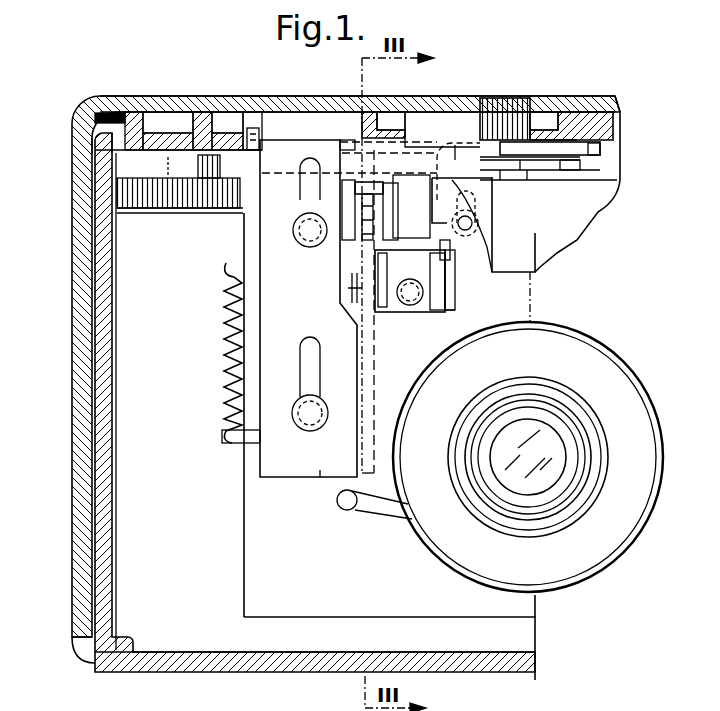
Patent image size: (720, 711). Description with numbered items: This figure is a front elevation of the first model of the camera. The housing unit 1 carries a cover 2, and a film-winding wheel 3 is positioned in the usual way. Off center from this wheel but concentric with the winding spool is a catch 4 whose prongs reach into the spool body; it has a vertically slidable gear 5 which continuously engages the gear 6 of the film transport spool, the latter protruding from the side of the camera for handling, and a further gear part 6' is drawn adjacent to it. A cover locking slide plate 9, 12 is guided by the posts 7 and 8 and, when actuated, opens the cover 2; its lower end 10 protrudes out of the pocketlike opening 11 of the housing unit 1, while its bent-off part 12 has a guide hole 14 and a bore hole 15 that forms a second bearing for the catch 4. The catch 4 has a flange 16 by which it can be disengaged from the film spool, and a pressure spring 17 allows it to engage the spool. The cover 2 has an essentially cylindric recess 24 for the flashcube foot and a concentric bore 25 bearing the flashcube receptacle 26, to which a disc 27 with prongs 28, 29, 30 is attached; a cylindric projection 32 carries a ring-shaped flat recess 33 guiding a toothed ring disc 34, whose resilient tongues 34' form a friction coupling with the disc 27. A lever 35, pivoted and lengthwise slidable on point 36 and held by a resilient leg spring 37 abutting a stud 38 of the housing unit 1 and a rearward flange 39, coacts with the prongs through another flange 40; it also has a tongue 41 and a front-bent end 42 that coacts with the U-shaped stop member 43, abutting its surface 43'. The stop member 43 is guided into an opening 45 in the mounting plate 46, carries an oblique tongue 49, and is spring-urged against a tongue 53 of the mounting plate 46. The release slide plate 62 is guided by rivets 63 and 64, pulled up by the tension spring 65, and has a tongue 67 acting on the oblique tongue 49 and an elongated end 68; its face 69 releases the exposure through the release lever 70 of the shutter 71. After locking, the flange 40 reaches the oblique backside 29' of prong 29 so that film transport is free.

The housing unit 1 is at (88, 212).
The cover 2 is at (98, 96).
The film-winding wheel 3 is at (172, 190).
The catch 4 is at (235, 133).
The gear 5 is at (90, 136).
The gear 6 is at (148, 167).
The guide 6' is at (104, 183).
The post 7 is at (192, 132).
The post 8 is at (133, 127).
The cover locking slide plate 9 is at (108, 416).
The lower end 10 is at (100, 662).
The pocketlike opening 11 is at (80, 646).
The bent-off part 12 is at (173, 137).
The guide hole 14 is at (200, 127).
The bore hole 15 is at (218, 140).
The flange 16 is at (247, 125).
The pressure spring 17 is at (254, 126).
The recess 24 is at (358, 113).
The bore 25 is at (558, 147).
The flashcube receptacle 26 is at (390, 108).
The disc 27 is at (593, 150).
The prong 28 is at (597, 143).
The prong 29 is at (518, 195).
The oblique backside 29' is at (554, 197).
The prong 30 is at (355, 147).
The cylindric projection 32 is at (600, 212).
The ring-shaped flat recess 33 is at (515, 163).
The toothed ring disc 34 is at (572, 156).
The resilient tongues 34' is at (574, 178).
The lever 35 is at (457, 157).
The point 36 is at (460, 219).
The leg spring 37 is at (462, 247).
The stud 38 is at (531, 273).
The flange 39 is at (437, 157).
The flange 40 is at (487, 147).
The tongue 41 is at (513, 224).
The end 42 is at (447, 277).
The stop member 43 is at (425, 312).
The surface 43' is at (463, 342).
The opening 45 is at (440, 308).
The mounting plate 46 is at (274, 557).
The oblique tongue 49 is at (420, 305).
The tongue 53 is at (440, 272).
The release slide plate 62 is at (290, 227).
The rivet 63 is at (302, 428).
The rivet 64 is at (293, 241).
The tension spring 65 is at (232, 393).
The tongue 67 is at (412, 222).
The elongated end 68 is at (435, 175).
The face 69 is at (320, 478).
The release lever 70 is at (386, 509).
The shutter 71 is at (463, 551).